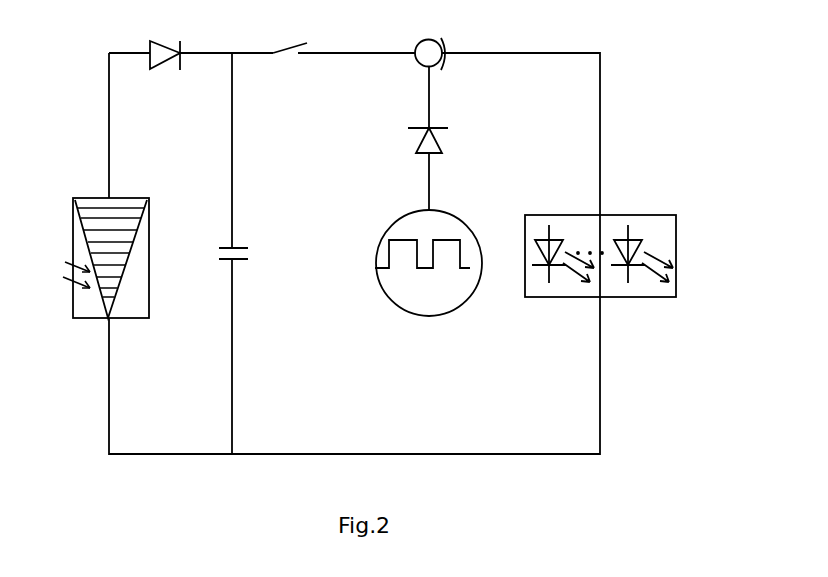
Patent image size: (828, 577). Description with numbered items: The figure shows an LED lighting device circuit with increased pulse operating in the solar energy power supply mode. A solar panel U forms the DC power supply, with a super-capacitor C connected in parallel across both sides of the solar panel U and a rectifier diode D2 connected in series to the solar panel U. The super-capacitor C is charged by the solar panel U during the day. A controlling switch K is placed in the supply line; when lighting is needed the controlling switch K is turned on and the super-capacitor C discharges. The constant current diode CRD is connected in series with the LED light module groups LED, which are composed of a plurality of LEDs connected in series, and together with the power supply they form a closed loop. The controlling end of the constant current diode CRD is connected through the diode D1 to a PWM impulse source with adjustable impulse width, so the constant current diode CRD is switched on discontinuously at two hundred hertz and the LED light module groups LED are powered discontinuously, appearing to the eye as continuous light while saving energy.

The rectifier diode D2 is at (176, 68).
The controlling switch K is at (290, 64).
The constant current diode CRD is at (447, 68).
The rectifier diode D1 is at (441, 146).
The super-capacitor C is at (246, 257).
The solar panel U is at (100, 258).
The LED light module groups LED is at (600, 280).